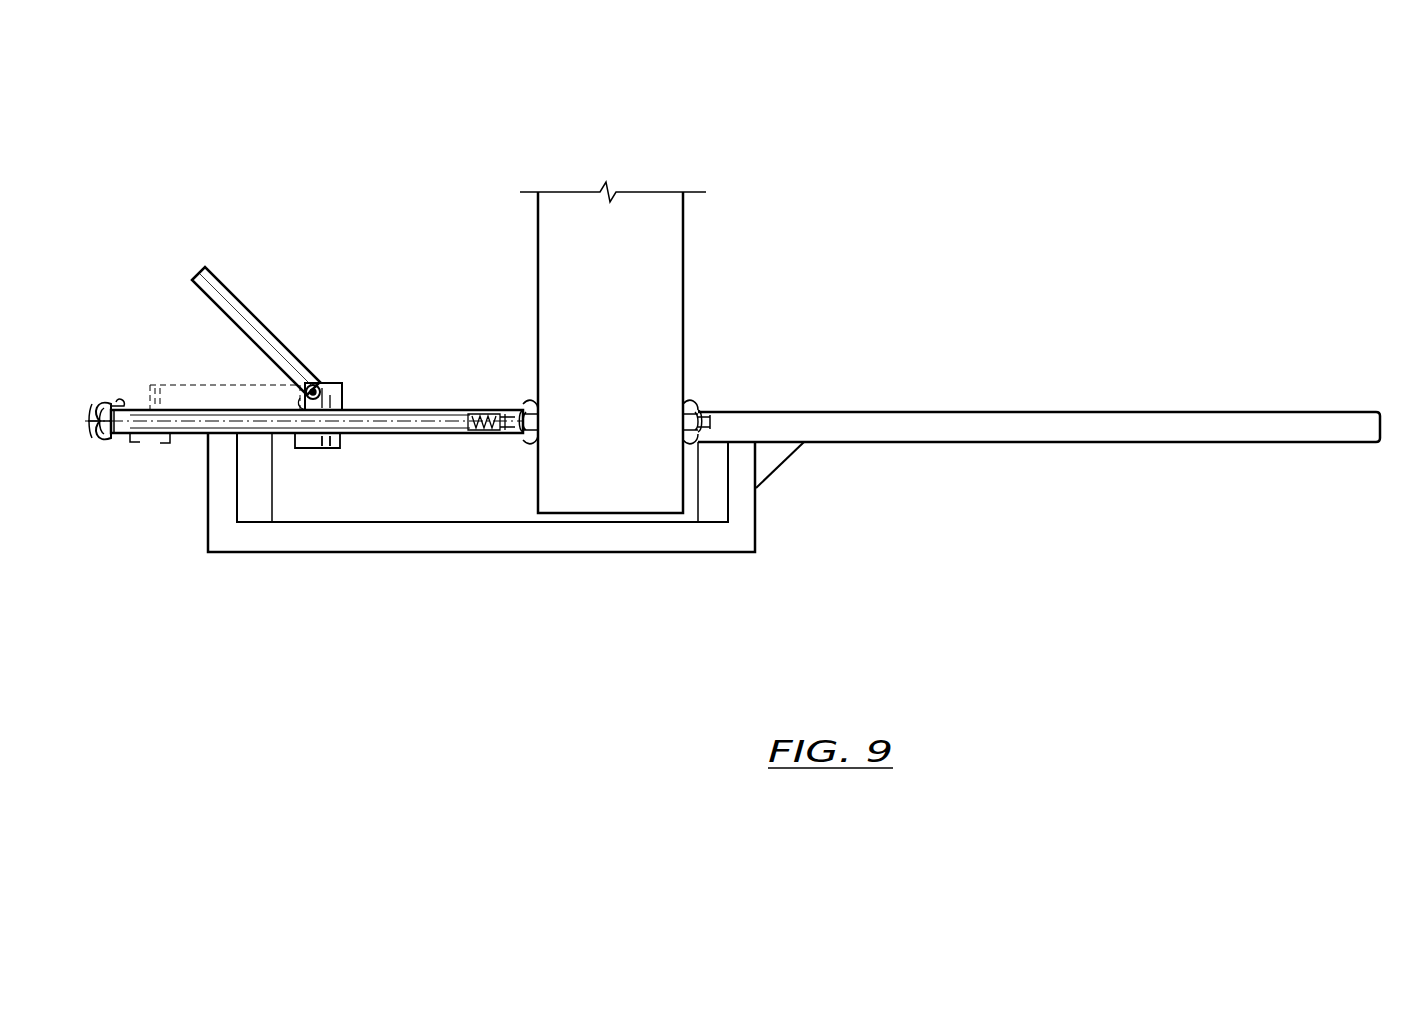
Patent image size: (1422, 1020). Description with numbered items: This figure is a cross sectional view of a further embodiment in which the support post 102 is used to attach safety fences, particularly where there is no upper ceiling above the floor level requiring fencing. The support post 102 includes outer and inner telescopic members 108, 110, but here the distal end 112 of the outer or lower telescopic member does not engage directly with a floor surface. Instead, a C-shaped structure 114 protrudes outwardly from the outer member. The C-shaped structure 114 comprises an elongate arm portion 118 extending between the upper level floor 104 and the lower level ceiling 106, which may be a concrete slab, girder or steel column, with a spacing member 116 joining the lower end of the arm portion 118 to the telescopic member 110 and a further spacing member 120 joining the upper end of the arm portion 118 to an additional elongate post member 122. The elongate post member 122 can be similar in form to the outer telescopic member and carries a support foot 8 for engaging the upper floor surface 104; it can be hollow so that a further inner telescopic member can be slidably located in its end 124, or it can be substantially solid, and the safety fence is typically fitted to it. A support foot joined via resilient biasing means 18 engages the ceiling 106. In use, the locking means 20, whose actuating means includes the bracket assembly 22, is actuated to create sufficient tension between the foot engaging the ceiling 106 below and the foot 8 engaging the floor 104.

The support foot 8 is at (695, 390).
The resilient biasing means 18 is at (483, 407).
The locking means 20 is at (283, 333).
The bracket assembly 22 is at (330, 377).
The support post 102 is at (825, 355).
The upper level floor 104 is at (693, 345).
The ceiling 106 is at (530, 393).
The outer telescopic member 108 is at (400, 406).
The inner telescopic member 110 is at (110, 396).
The distal end 112 is at (105, 446).
The C-shaped structure 114 is at (481, 560).
The spacing member 116 is at (222, 490).
The elongate arm portion 118 is at (612, 536).
The spacing member 120 is at (742, 508).
The elongate post member 122 is at (1017, 430).
The end 124 is at (1328, 412).